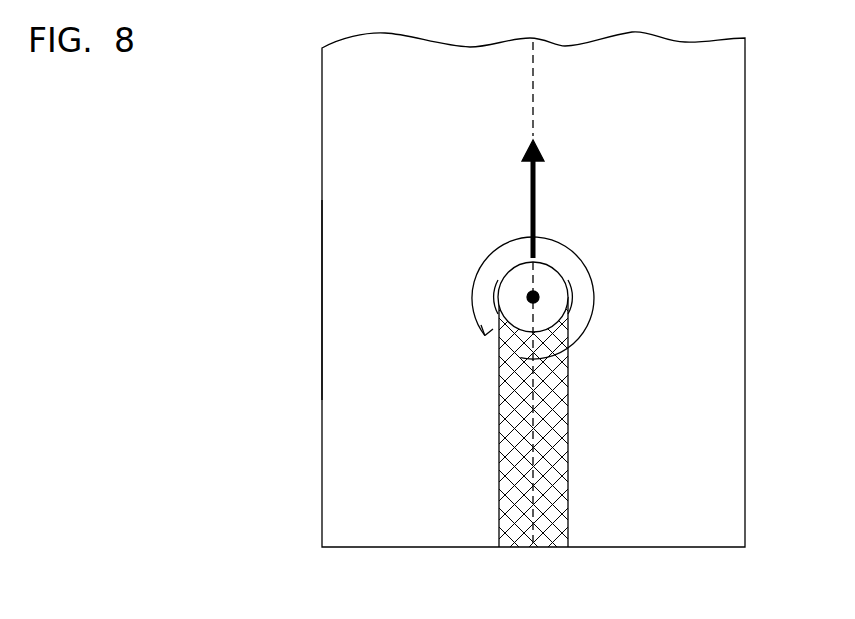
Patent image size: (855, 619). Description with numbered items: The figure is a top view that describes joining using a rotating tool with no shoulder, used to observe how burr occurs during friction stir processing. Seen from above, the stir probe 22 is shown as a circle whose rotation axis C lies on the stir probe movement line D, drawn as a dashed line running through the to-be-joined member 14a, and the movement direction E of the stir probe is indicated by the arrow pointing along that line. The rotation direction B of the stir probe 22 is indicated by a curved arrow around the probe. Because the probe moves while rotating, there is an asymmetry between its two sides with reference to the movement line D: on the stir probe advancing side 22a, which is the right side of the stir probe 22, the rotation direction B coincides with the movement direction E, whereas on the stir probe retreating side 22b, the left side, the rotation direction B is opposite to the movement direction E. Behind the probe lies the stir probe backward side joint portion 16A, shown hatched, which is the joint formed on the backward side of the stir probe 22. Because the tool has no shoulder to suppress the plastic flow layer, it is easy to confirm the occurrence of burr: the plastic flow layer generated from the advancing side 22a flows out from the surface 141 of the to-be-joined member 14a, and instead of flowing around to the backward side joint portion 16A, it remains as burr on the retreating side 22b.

The surface 141 is at (335, 163).
The to-be-joined member 14a is at (319, 277).
The stir probe 22 is at (553, 262).
The stir probe advancing side 22a is at (570, 298).
The stir probe retreating side 22b is at (497, 297).
The stir probe backward side joint portion 16A is at (569, 510).
The rotation direction B is at (588, 262).
The rotation axis C is at (527, 292).
The stir probe movement line D is at (536, 98).
The movement direction E is at (538, 181).